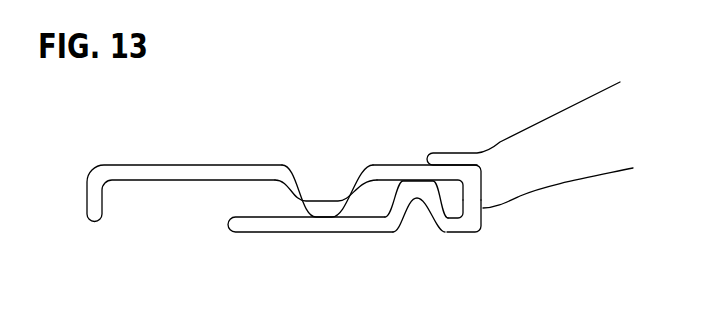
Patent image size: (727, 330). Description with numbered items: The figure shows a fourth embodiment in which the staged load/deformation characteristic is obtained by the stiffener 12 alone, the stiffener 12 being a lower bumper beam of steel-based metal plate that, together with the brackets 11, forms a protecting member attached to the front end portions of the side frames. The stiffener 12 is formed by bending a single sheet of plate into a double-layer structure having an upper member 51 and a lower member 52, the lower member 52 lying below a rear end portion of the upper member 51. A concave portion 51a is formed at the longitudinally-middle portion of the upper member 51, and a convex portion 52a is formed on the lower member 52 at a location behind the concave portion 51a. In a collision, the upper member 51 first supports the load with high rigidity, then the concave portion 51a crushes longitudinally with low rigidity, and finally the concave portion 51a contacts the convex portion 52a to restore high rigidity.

The bracket 11 is at (580, 170).
The stiffener 12 is at (408, 103).
The upper member 51 is at (284, 165).
The concave portion 51a is at (312, 202).
The lower member 52 is at (354, 236).
The convex portion 52a is at (413, 189).